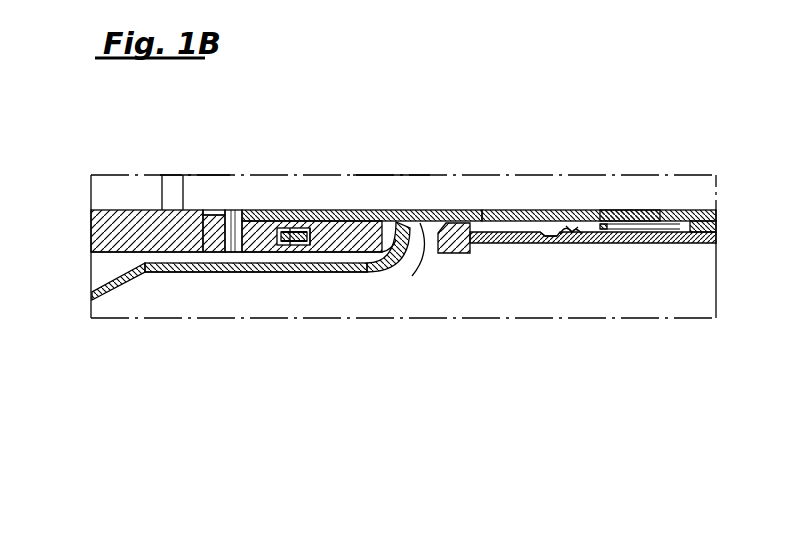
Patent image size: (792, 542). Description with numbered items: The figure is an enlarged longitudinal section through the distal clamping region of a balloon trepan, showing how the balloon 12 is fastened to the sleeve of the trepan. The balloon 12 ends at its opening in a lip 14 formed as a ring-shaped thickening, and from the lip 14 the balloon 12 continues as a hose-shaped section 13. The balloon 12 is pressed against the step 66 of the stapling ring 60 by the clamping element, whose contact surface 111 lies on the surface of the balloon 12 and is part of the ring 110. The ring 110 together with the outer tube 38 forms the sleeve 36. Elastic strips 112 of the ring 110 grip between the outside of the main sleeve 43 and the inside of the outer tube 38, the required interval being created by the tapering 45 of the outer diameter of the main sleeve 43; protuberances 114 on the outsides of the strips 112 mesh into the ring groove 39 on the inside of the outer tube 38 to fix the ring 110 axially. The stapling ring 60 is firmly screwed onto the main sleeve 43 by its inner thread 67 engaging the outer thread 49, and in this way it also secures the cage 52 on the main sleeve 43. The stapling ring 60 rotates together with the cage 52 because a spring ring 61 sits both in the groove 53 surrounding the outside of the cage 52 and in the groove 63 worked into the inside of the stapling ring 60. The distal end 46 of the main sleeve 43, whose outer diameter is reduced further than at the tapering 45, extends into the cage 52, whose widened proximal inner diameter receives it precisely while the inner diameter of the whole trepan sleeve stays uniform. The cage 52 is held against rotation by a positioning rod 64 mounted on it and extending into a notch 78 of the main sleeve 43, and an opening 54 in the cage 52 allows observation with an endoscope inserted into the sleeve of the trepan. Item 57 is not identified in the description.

The balloon 12 is at (104, 300).
The hose-shaped section 13 is at (258, 273).
The lip 14 is at (418, 236).
The sleeve 36 is at (607, 253).
The outer tube 38 is at (692, 250).
The ring groove 39 is at (578, 244).
The main sleeve 43 is at (696, 208).
The tapering 45 is at (620, 210).
The distal end 46 is at (260, 210).
The outer thread 49 is at (352, 253).
The cage 52 is at (125, 230).
The groove 53 is at (296, 228).
The opening 54 is at (156, 183).
The pin wall 57 is at (322, 236).
The stapling ring 60 is at (333, 253).
The spring ring 61 is at (318, 228).
The groove 63 is at (298, 273).
The positioning rod 64 is at (207, 263).
The step 66 is at (402, 262).
The inner thread 67 is at (357, 210).
The notch 78 is at (207, 212).
The ring 110 is at (462, 256).
The contact surface 111 is at (427, 210).
The strips 112 is at (513, 222).
The protuberances 114 is at (550, 244).